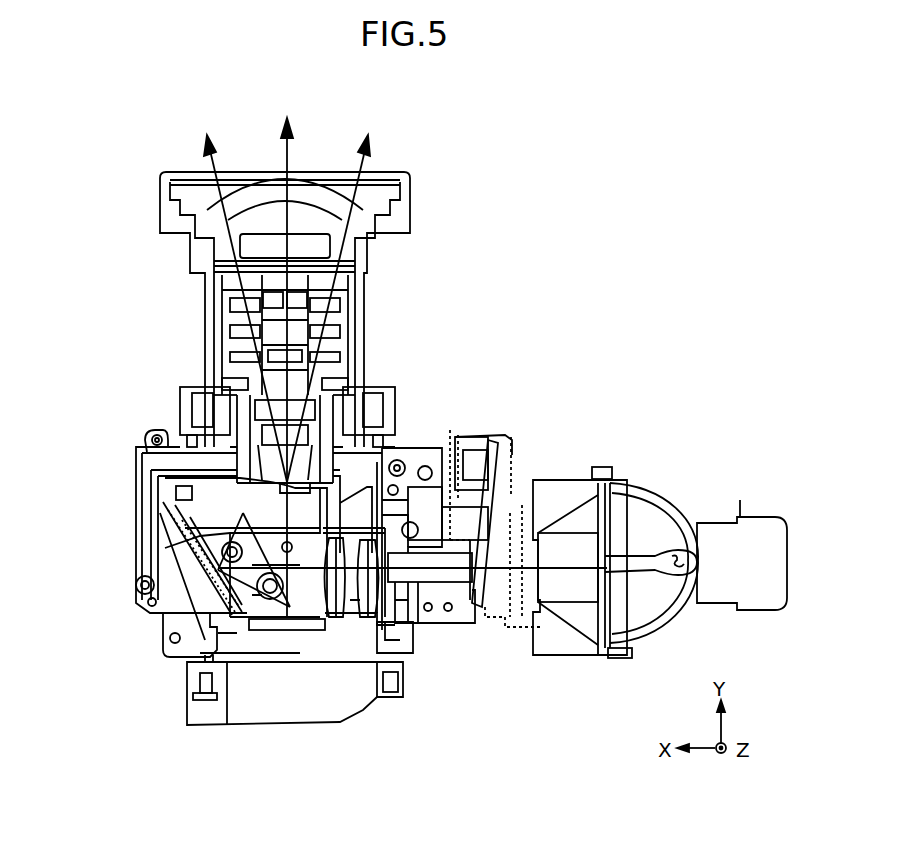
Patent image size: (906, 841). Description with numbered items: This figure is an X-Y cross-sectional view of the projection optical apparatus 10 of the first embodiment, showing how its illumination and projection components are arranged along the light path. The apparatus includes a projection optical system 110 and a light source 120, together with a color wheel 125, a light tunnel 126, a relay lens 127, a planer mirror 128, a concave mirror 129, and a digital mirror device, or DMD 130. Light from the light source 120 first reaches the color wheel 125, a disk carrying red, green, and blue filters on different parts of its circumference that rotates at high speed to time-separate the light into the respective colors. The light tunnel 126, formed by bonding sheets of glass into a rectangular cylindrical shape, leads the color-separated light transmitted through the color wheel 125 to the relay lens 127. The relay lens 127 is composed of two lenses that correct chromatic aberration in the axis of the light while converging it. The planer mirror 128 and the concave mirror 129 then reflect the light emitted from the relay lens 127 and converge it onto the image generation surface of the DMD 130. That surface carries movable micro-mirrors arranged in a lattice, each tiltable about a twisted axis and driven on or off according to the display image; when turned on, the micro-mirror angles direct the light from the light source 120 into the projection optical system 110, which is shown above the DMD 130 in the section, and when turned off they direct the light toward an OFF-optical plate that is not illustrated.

The projection optical apparatus 10 is at (110, 137).
The projection optical system 110 is at (205, 325).
The light source 120 is at (657, 493).
The color wheel 125 is at (500, 462).
The light tunnel 126 is at (452, 584).
The relay lens 127 is at (373, 580).
The planer mirror 128 is at (210, 576).
The concave mirror 129 is at (208, 506).
The digital mirror device (DMD) 130 is at (285, 632).